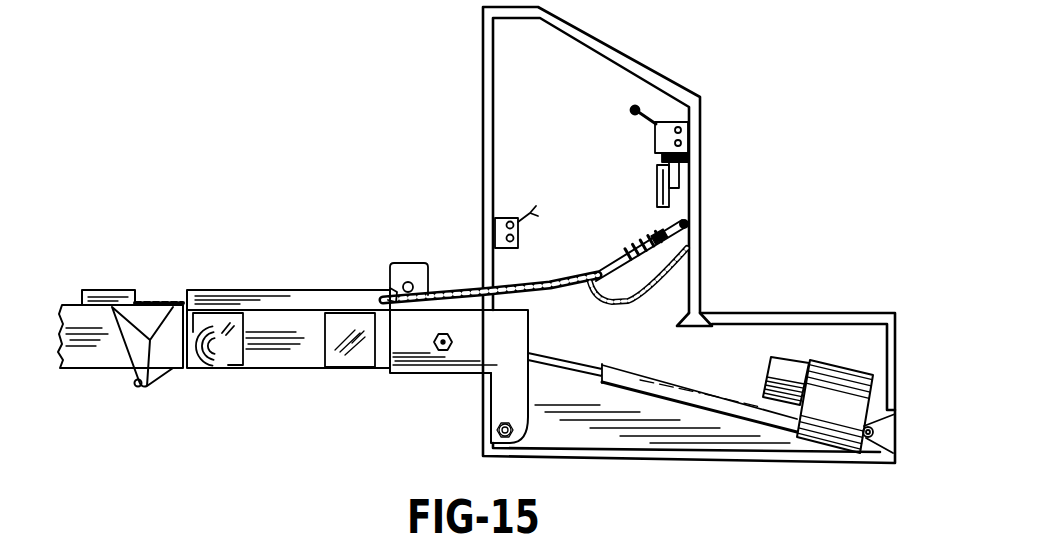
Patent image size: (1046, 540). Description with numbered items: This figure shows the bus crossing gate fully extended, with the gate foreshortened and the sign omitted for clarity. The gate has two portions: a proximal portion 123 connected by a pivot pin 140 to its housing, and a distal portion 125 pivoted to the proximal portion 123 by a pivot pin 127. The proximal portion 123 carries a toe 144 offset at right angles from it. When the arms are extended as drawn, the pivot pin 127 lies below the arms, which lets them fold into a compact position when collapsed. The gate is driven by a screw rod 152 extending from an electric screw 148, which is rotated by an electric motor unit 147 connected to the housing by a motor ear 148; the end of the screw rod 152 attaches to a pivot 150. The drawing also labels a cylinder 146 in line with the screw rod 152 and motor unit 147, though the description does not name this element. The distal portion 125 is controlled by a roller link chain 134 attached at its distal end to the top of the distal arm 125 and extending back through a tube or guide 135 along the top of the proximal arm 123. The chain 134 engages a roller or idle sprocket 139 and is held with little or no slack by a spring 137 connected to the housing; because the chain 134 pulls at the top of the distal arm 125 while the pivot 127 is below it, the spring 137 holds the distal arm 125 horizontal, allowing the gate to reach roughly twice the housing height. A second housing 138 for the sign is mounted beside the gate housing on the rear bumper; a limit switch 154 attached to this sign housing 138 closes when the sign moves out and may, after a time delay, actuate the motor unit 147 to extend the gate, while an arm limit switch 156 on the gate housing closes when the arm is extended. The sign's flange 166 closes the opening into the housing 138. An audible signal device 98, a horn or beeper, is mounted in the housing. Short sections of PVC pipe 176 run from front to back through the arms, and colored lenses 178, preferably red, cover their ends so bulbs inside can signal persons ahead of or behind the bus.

The audible signal device 98 is at (655, 190).
The proximal portion 123 is at (432, 367).
The distal portion 125 is at (100, 366).
The pivot pin 127 is at (212, 408).
The roller link chain 134 is at (152, 303).
The tube or guide 135 is at (348, 290).
The spring 137 is at (637, 250).
The housing 138 is at (700, 195).
The roller or idle sprocket 139 is at (430, 290).
The pivot pin 140 is at (498, 426).
The toe 144 is at (505, 397).
The cylinder 146 is at (718, 365).
The electric motor unit 147 is at (840, 397).
The electric screw 148 is at (885, 437).
The pivot 150 is at (452, 333).
The screw rod 152 is at (535, 372).
The limit switch 154 is at (503, 217).
The arm limit switch 156 is at (668, 125).
The flange 166 is at (288, 538).
The PVC pipe 176 is at (210, 367).
The colored lenses 178 is at (333, 360).